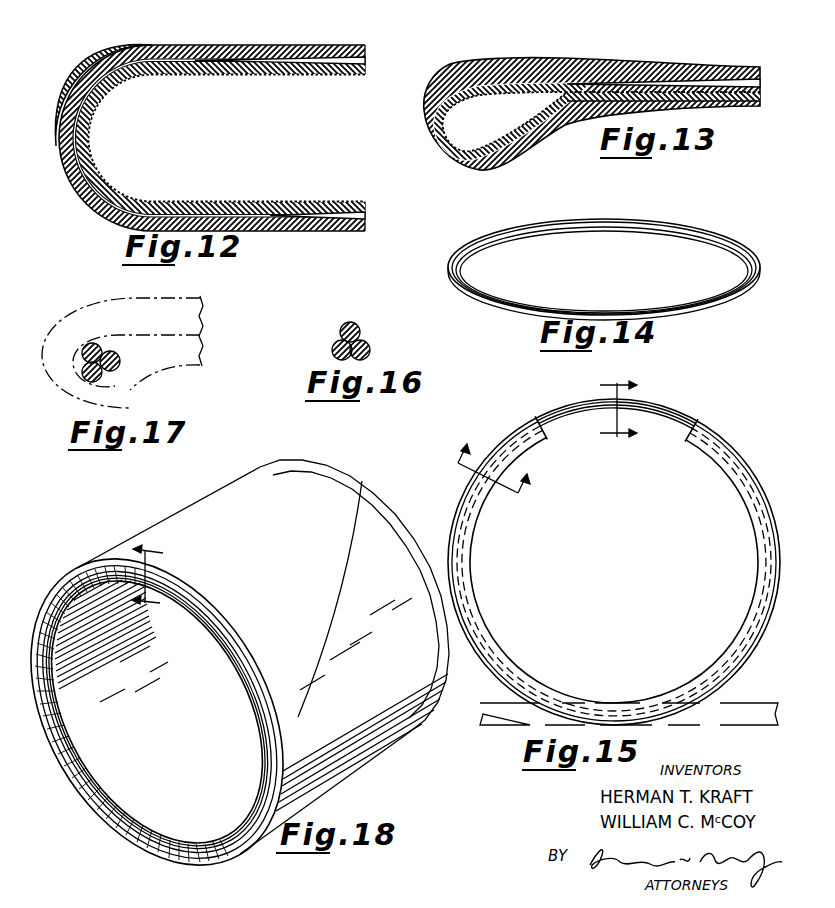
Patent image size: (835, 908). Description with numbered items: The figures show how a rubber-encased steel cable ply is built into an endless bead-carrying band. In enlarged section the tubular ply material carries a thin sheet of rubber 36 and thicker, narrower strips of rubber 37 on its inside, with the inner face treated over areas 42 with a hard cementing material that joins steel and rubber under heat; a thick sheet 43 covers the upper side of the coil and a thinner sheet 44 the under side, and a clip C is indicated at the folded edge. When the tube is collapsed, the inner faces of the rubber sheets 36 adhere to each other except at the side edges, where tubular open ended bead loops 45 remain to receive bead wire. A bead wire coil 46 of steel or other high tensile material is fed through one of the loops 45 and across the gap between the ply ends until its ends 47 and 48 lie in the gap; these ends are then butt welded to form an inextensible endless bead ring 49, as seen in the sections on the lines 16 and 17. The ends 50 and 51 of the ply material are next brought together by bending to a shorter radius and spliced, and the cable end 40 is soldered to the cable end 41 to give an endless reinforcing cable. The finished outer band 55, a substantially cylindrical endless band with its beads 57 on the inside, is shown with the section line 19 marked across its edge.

In FIG. 12, the thick sheet 43 is at (172, 44).
In FIG. 13, the thick sheet 43 is at (668, 68).
In FIG. 12, the thin sheet of rubber 36 is at (257, 72).
In FIG. 13, the thin sheet of rubber 36 is at (602, 90).
In FIG. 12, the strips of rubber 37 is at (88, 120).
In FIG. 13, the strips of rubber 37 is at (433, 133).
In FIG. 12, the areas 42 is at (105, 188).
In FIG. 12, the thinner sheet 44 is at (278, 229).
In FIG. 13, the thinner sheet 44 is at (728, 108).
In FIG. 12, the clip C is at (80, 78).
In FIG. 13, the clip C is at (453, 73).
In FIG. 13, the bead loops 45 is at (480, 134).
In FIG. 17, the bead loops 45 is at (128, 357).
In FIG. 15, the bead loops 45 is at (708, 727).
In FIG. 14, the bead wire coil 46 is at (727, 241).
In FIG. 15, the bead wire coil 46 is at (742, 444).
In FIG. 14, the end of the coil 47 is at (603, 223).
In FIG. 14, the end of the coil 48 is at (607, 237).
In FIG. 17, the bead ring 49 is at (113, 352).
In FIG. 16, the bead ring 49 is at (364, 336).
In FIG. 15, the bead ring 49 is at (662, 404).
In FIG. 15, the cable end 40 is at (540, 420).
In FIG. 15, the cable end 41 is at (697, 410).
In FIG. 15, the end of the ply material 50 is at (541, 431).
In FIG. 15, the end of the ply material 51 is at (695, 433).
In FIG. 15, the section line 16— 16 is at (602, 412).
In FIG. 15, the section line 17— 17 is at (484, 487).
In FIG. 18, the section line 19- 19 is at (163, 589).
In FIG. 18, the outer band 55 is at (373, 748).
In FIG. 18, the beads 57 is at (242, 664).